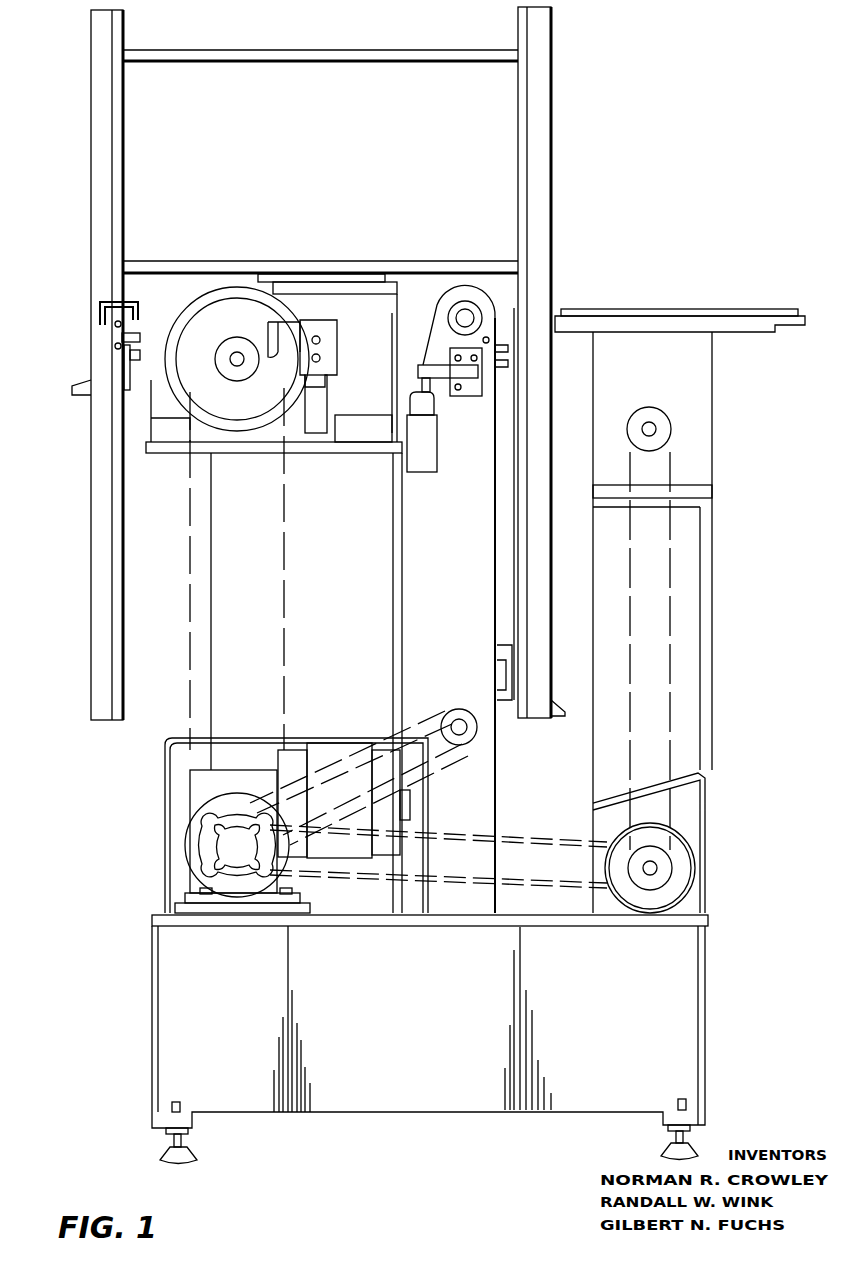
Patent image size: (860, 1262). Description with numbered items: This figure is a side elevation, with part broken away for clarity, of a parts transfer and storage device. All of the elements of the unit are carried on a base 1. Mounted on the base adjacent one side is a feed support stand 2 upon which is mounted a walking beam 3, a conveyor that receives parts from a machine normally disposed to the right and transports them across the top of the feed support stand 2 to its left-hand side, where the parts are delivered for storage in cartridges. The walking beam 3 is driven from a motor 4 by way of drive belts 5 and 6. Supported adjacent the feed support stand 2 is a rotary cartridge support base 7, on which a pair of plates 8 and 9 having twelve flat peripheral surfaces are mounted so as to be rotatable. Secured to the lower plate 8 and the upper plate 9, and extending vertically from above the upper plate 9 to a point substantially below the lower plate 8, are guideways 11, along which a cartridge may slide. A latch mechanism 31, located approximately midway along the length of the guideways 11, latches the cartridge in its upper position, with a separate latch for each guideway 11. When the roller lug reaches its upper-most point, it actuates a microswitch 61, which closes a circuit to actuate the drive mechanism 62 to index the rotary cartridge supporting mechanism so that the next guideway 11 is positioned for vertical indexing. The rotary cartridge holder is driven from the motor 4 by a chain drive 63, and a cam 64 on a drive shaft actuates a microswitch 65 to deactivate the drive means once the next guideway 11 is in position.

The base 1 is at (414, 1032).
The feed support stand 2 is at (700, 463).
The walking beam 3 is at (785, 313).
The motor 4 is at (180, 845).
The drive belt 5 is at (514, 838).
The drive belt 6 is at (672, 748).
The rotary cartridge support base 7 is at (365, 622).
The lower plate 8 is at (390, 266).
The upper plate 9 is at (400, 53).
The guideway 11 is at (105, 200).
The latch mechanism 31 is at (117, 326).
The microswitch 61 is at (422, 406).
The drive mechanism 62 is at (372, 344).
The chain drive 63 is at (285, 590).
The cam 64 is at (253, 357).
The microswitch 65 is at (328, 347).